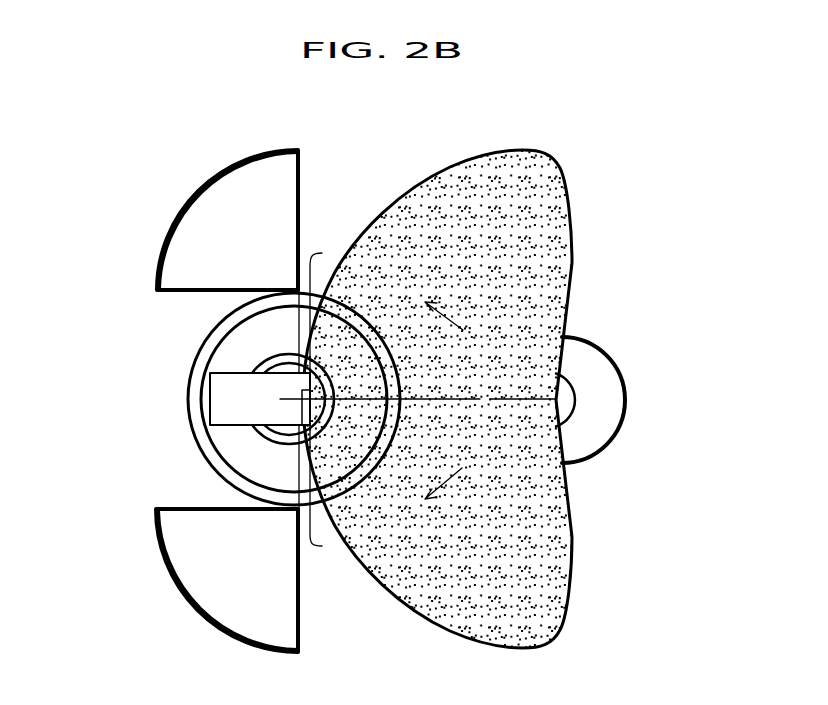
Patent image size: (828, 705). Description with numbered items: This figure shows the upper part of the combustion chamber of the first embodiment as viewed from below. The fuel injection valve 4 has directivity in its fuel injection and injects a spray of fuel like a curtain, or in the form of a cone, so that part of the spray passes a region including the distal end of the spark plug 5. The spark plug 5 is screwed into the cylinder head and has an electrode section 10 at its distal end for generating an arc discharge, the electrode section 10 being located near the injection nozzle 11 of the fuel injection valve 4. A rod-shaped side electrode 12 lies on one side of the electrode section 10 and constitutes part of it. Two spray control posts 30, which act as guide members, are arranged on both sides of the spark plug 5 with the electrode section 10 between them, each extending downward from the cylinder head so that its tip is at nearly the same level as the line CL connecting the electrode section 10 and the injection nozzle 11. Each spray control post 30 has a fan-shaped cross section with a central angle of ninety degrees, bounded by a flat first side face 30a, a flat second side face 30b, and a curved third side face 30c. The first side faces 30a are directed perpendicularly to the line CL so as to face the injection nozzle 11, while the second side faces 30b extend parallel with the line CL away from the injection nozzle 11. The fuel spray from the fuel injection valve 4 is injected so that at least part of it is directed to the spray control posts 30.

The fuel injection valve 4 is at (610, 352).
The spark plug 5 is at (188, 382).
The electrode section 10 is at (240, 352).
The injection nozzle 11 is at (552, 400).
The side electrode 12 is at (218, 410).
The spray control post 30 is at (174, 207).
The first side face 30a is at (302, 183).
The second side face 30b is at (178, 292).
The third side face 30c is at (218, 172).
The line CL is at (460, 402).